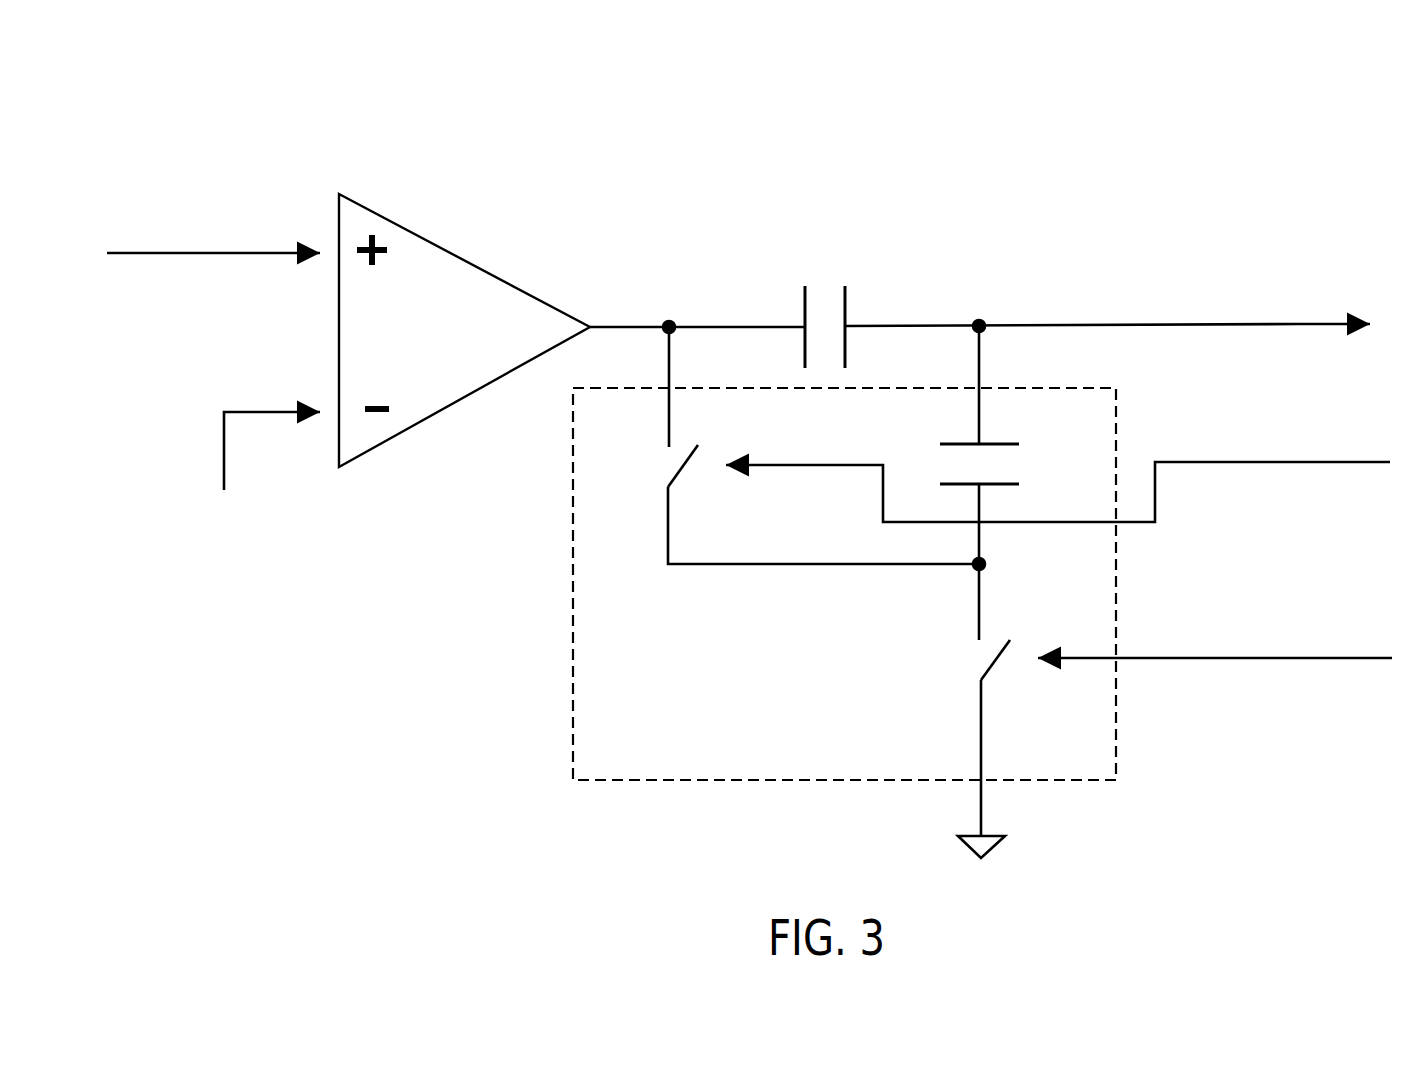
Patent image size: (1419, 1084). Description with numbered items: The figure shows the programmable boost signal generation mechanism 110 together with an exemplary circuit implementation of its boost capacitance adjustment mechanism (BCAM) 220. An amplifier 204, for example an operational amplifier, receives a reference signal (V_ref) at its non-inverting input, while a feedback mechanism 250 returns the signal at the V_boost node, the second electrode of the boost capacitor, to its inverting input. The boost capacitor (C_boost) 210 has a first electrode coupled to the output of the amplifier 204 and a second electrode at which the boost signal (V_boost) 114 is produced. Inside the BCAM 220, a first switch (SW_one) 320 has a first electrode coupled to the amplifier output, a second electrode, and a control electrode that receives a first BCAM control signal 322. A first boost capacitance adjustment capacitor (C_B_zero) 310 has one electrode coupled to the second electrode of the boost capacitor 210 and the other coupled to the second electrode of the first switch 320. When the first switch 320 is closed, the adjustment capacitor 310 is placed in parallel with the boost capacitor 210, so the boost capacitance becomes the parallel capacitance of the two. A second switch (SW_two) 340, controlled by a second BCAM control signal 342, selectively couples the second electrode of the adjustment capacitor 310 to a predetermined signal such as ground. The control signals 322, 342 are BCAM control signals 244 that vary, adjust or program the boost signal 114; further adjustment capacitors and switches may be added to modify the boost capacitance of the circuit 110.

The programmable boost signal generation mechanism 110 is at (410, 826).
The boost signal 114 is at (1307, 321).
The amplifier 204 is at (453, 253).
The boost capacitor 210 is at (822, 248).
The boost capacitance adjustment mechanism 220 is at (618, 770).
The BCAM control signals 244 is at (1326, 548).
The feedback mechanism 250 is at (224, 490).
The first boost capacitance adjustment capacitor 310 is at (1016, 473).
The first switch 320 is at (644, 472).
The first BCAM control signal 322 is at (1060, 474).
The second switch 340 is at (957, 746).
The second BCAM control signal 342 is at (1216, 641).